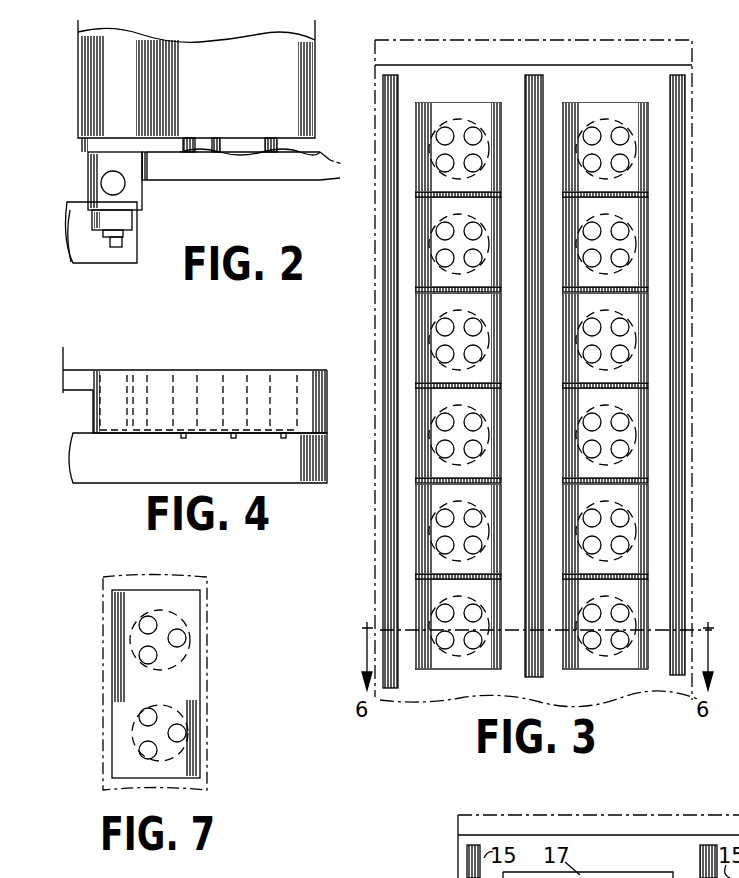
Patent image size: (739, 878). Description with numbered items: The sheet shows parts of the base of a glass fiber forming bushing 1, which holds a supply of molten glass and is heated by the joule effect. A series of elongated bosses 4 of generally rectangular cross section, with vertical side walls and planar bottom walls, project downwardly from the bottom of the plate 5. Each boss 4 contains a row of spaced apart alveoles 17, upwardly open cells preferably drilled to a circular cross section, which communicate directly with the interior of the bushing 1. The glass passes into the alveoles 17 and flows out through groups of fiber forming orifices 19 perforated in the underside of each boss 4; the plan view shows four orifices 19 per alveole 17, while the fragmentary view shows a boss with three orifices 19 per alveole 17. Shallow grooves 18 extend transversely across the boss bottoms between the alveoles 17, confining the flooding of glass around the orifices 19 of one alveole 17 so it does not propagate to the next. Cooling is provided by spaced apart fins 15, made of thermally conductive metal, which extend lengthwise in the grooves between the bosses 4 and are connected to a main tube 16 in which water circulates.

In FIG. 2, the bushing 1 is at (225, 104).
In FIG. 2, the boss 4 is at (226, 165).
In FIG. 4, the boss 4 is at (93, 405).
In FIG. 7, the boss 4 is at (200, 690).
In FIG. 3, the boss 4 is at (415, 255).
In FIG. 2, the plate 5 is at (100, 140).
In FIG. 2, the fin 15 is at (300, 170).
In FIG. 4, the fin 15 is at (322, 462).
In FIG. 3, the fin 15 is at (398, 98).
In FIG. 2, the main tube 16 is at (127, 186).
In FIG. 4, the alveole 17 is at (161, 380).
In FIG. 7, the alveole 17 is at (190, 652).
In FIG. 3, the alveole 17 is at (433, 340).
In FIG. 2, the groove 18 is at (190, 154).
In FIG. 4, the groove 18 is at (183, 438).
In FIG. 3, the groove 18 is at (415, 196).
In FIG. 7, the orifice 19 is at (180, 636).
In FIG. 3, the orifice 19 is at (445, 163).